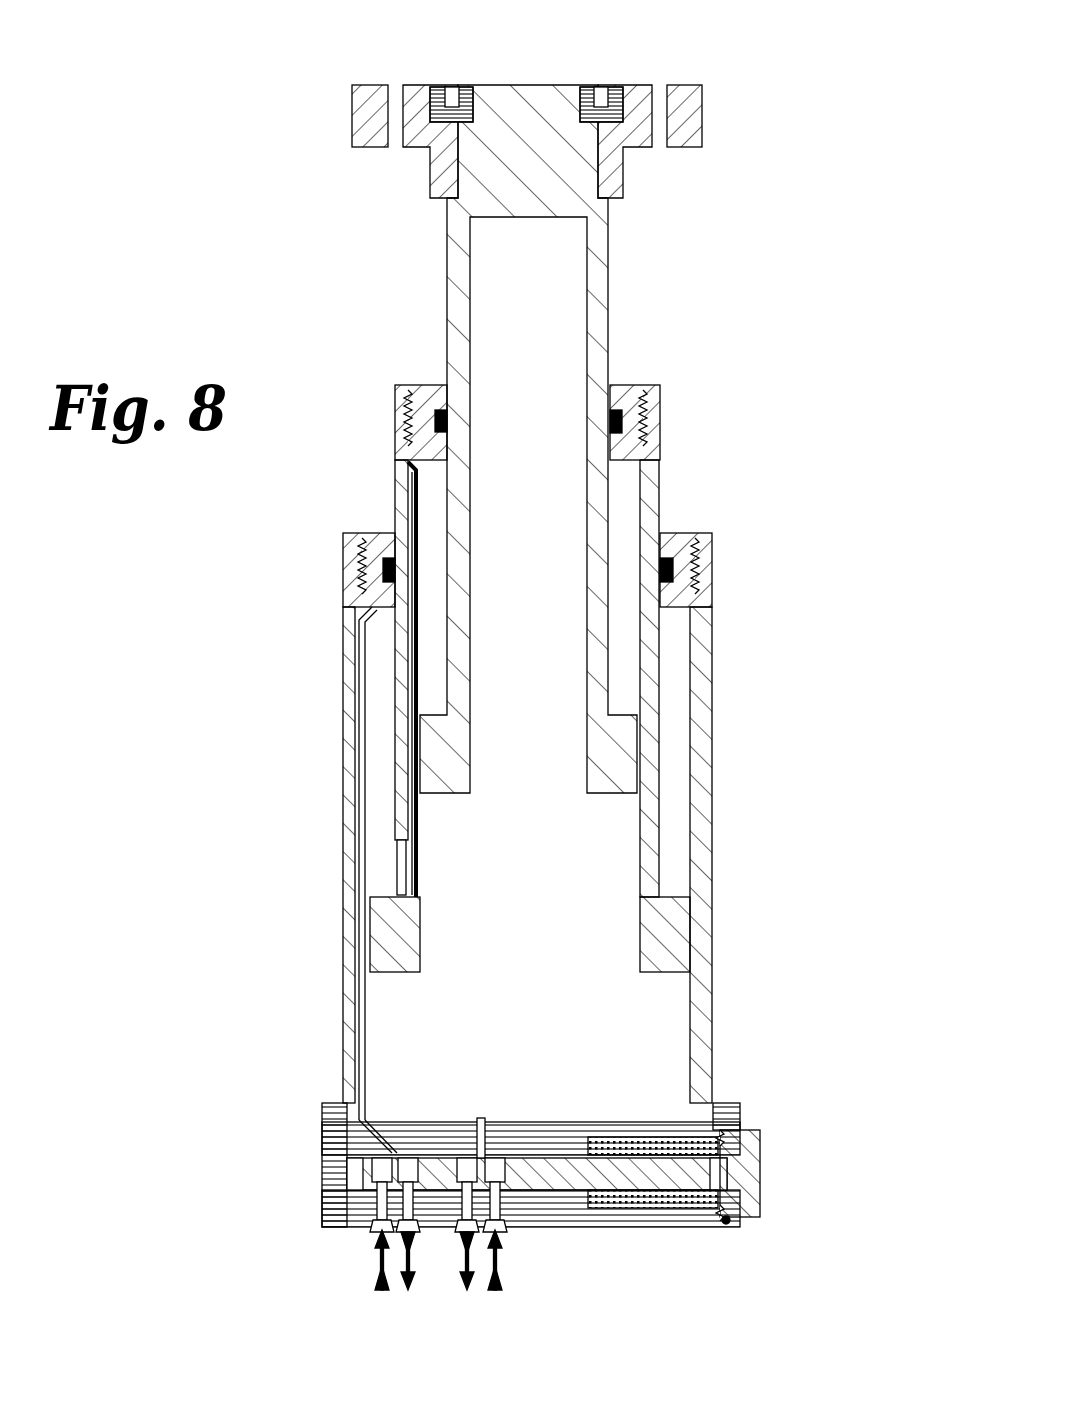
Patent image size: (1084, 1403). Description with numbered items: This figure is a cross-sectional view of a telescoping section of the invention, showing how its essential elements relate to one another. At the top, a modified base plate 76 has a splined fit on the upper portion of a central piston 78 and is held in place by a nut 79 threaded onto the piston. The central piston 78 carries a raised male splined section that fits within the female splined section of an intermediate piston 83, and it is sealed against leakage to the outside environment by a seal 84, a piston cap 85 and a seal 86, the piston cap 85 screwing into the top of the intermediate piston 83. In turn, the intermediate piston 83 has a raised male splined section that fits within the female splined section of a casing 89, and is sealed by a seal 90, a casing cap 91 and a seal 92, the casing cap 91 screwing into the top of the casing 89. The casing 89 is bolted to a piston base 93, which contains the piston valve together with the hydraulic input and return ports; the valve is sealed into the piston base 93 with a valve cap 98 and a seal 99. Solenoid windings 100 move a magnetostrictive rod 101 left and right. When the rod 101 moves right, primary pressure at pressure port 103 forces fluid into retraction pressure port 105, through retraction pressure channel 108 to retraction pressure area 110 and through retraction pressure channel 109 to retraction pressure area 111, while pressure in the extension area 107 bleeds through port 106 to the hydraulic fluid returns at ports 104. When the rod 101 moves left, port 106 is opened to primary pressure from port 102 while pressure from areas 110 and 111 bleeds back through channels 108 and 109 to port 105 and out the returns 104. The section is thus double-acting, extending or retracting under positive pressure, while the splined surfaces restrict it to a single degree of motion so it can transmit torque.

The modified base plate 76 is at (617, 135).
The central piston 78 is at (457, 283).
The nut 79 is at (455, 103).
The intermediate piston 83 is at (650, 683).
The seal 84 is at (645, 442).
The piston cap 85 is at (642, 388).
The seal 86 is at (618, 420).
The casing 89 is at (698, 872).
The seal 90 is at (700, 593).
The casing cap 91 is at (700, 542).
The seal 92 is at (672, 568).
The piston base 93 is at (543, 1138).
The valve cap 98 is at (750, 1165).
The seal 99 is at (728, 1222).
The solenoid windings 100 is at (681, 1207).
The magnetostrictive rod 101 is at (577, 1178).
The port 102 is at (497, 1227).
The pressure port 103 is at (380, 1225).
The ports 104 is at (437, 1252).
The retraction pressure port 105 is at (363, 1135).
The port 106 is at (455, 1118).
The extension area 107 is at (503, 1012).
The retraction pressure channel 108 is at (355, 792).
The retraction pressure channel 109 is at (395, 733).
The retraction pressure area 110 is at (385, 845).
The retraction pressure area 111 is at (433, 532).